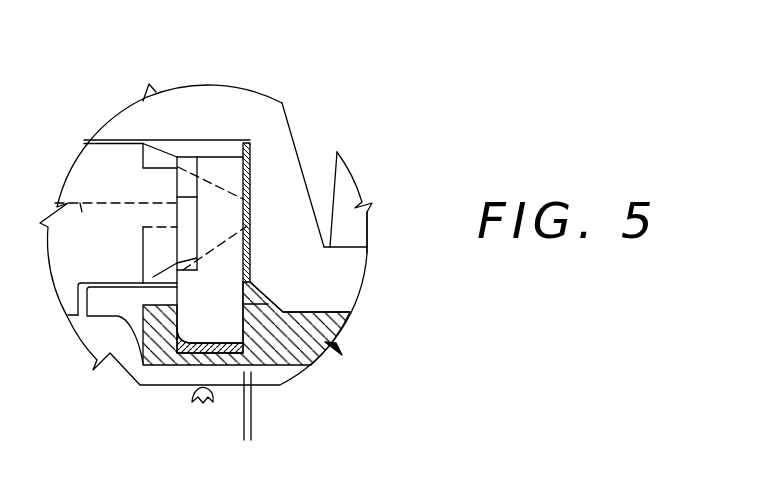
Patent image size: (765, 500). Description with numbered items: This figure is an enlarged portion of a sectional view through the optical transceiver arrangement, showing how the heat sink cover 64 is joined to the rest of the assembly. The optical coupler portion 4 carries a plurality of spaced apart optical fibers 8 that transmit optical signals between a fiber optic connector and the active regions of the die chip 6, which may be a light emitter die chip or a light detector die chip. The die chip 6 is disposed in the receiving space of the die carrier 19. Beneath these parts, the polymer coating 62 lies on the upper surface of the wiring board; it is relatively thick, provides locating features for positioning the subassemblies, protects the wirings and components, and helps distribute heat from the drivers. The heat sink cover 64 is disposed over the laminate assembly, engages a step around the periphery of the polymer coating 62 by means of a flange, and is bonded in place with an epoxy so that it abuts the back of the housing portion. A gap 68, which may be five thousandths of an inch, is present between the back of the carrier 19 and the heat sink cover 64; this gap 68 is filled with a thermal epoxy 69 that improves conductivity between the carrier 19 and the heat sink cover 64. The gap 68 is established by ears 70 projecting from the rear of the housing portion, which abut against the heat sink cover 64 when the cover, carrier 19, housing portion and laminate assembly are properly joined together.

The optical coupler portion 4 is at (83, 160).
The die chip 6 is at (190, 197).
The optical fibers 8 is at (80, 211).
The die carrier 19 is at (220, 186).
The polymer coating 62 is at (340, 323).
The heat sink cover 64 is at (253, 157).
The gap 68 is at (207, 422).
The thermal epoxy 69 is at (284, 155).
The ears 70 is at (257, 203).